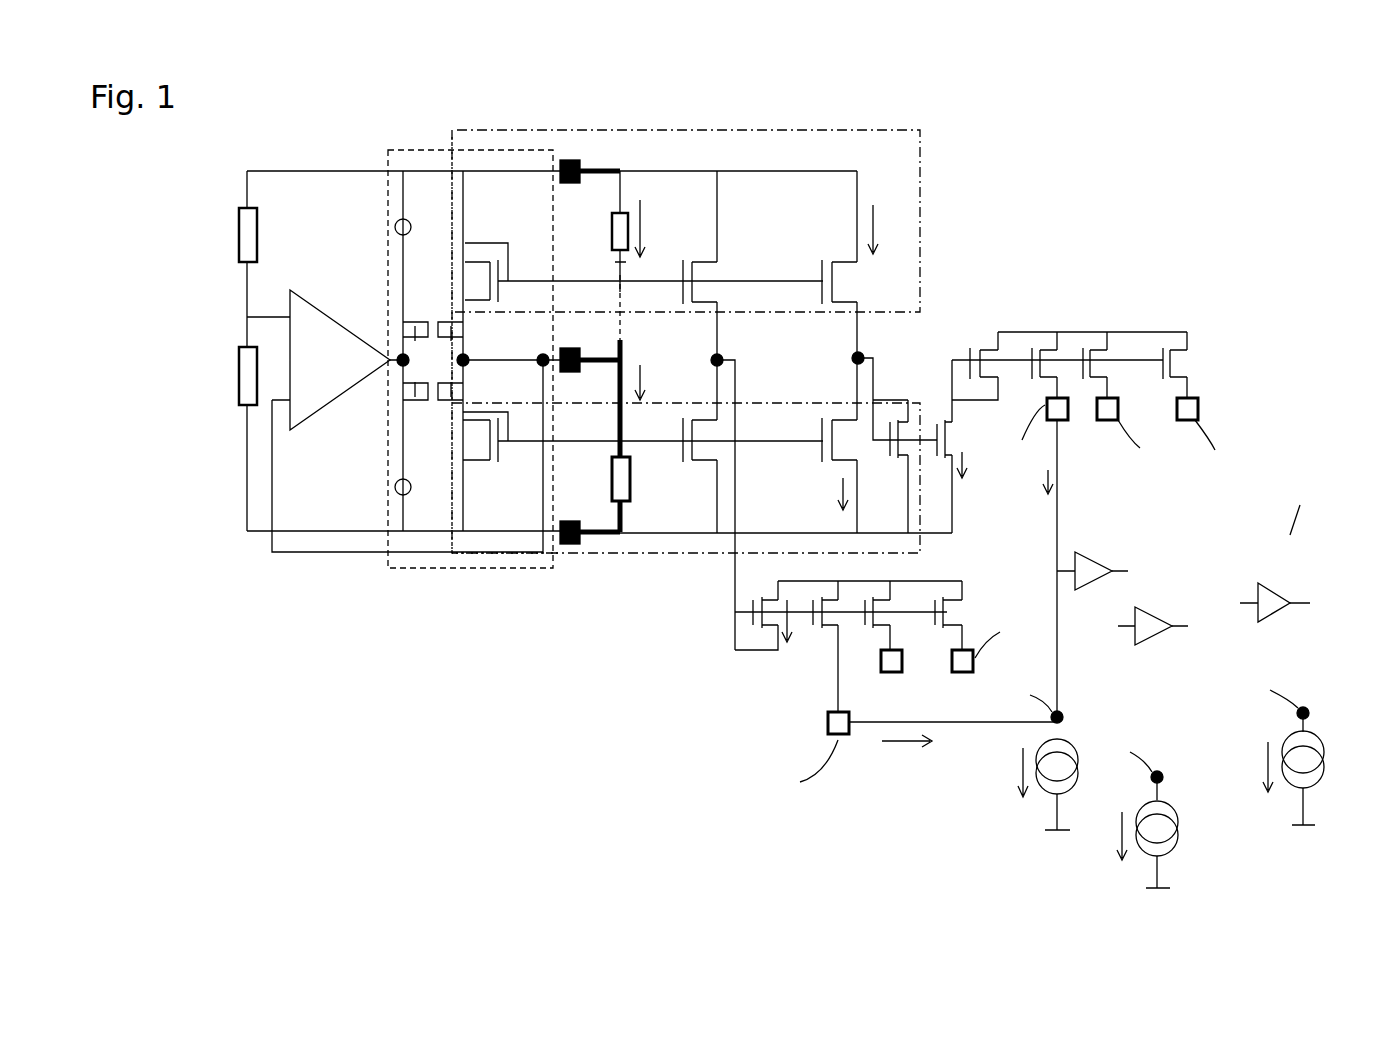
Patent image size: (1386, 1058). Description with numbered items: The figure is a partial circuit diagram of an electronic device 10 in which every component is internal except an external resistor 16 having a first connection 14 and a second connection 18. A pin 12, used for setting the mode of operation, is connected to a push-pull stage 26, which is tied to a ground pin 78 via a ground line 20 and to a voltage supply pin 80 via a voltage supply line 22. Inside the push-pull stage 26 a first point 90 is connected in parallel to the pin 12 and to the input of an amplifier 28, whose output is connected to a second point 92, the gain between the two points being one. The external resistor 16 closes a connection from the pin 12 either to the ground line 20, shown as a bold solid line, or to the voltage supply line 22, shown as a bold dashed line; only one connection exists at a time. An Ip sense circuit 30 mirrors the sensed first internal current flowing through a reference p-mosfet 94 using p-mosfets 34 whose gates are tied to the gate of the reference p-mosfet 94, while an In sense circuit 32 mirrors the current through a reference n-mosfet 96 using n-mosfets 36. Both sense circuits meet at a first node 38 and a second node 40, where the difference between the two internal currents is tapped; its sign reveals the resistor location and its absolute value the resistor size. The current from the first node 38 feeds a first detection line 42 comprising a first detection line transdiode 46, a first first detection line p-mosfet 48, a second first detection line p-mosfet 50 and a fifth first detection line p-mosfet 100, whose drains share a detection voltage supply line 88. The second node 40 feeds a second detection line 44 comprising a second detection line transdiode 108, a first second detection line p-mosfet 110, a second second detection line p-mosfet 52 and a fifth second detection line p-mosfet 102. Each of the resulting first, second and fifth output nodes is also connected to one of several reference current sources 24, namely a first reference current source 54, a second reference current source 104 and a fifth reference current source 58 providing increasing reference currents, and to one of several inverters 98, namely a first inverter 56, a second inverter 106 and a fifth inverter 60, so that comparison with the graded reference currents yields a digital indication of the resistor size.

The electronic device 10 is at (275, 788).
The pin 12 is at (562, 356).
The first connection 14 is at (619, 282).
The external resistor 16 is at (610, 232).
The second connection 18 is at (618, 206).
The ground line 20 is at (248, 536).
The voltage supply line 22 is at (742, 172).
The reference current sources 24 is at (1124, 810).
The push-pull stage 26 is at (428, 576).
The amplifier 28 is at (338, 378).
The Ip sense circuit 30 is at (925, 236).
The In sense circuit 32 is at (652, 560).
The p-mosfets 34 is at (702, 272).
The n-mosfets 36 is at (712, 418).
The first node 38 is at (722, 360).
The second node 40 is at (864, 358).
The first detection line 42 is at (843, 692).
The second detection line 44 is at (1039, 463).
The first detection line transdiode 46 is at (745, 640).
The first first detection line p-mosfet 48 is at (832, 650).
The second first detection line p-mosfet 50 is at (884, 622).
The second second detection line p-mosfet 52 is at (1095, 348).
The first reference current source 54 is at (1062, 712).
The first inverter 56 is at (1092, 560).
The fifth reference current source 58 is at (1312, 712).
The fifth inverter 60 is at (1272, 590).
The ground pin 78 is at (570, 590).
The voltage supply pin 80 is at (572, 158).
The detection voltage supply line 88 is at (1062, 328).
The first point 90 is at (468, 366).
The second point 92 is at (400, 352).
The reference p-mosfet 94 is at (480, 255).
The reference n-mosfet 96 is at (470, 458).
The inverters 98 is at (1202, 553).
The fifth first detection line p-mosfet 100 is at (1008, 572).
The fifth second detection line p-mosfet 102 is at (1180, 346).
The second reference current source 104 is at (1163, 772).
The second inverter 106 is at (1148, 614).
The second detection line transdiode 108 is at (975, 348).
The first second detection line p-mosfet 110 is at (1046, 348).